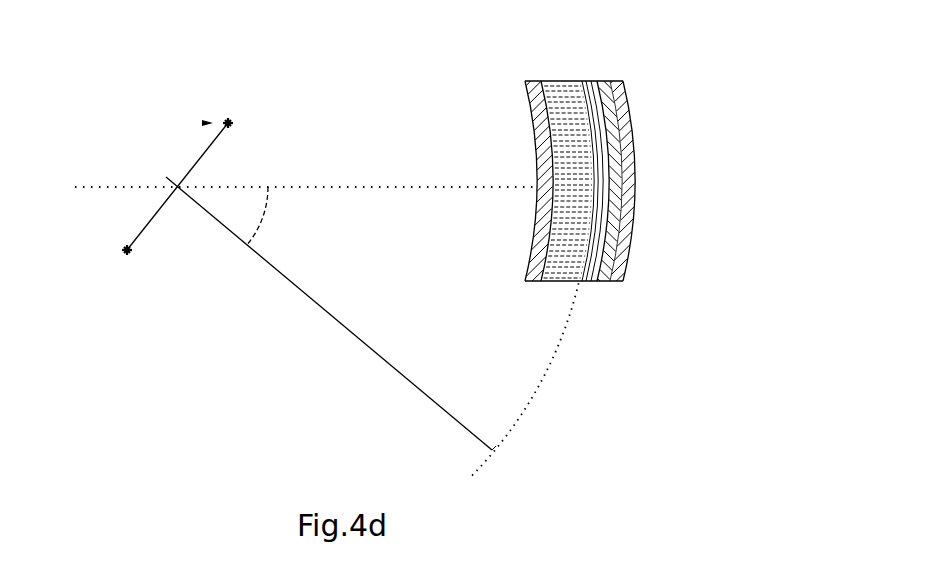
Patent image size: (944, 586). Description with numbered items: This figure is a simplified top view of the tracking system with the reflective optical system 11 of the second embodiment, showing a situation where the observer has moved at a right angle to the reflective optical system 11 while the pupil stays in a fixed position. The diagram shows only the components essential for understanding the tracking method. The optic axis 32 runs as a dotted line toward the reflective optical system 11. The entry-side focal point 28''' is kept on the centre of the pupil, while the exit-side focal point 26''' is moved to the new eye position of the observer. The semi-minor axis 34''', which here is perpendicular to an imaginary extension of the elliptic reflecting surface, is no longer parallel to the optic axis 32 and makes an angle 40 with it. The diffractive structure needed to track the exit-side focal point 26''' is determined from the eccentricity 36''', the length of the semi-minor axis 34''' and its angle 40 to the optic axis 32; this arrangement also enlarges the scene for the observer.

The reflective optical system 11 is at (580, 151).
The optic axis 32 is at (301, 162).
The semi-minor axis 34''' is at (372, 327).
The angle 40 is at (245, 216).
The eccentricity 36''' is at (171, 186).
The exit-side focal point 26''' is at (229, 103).
The entry-side focal point 28''' is at (115, 267).